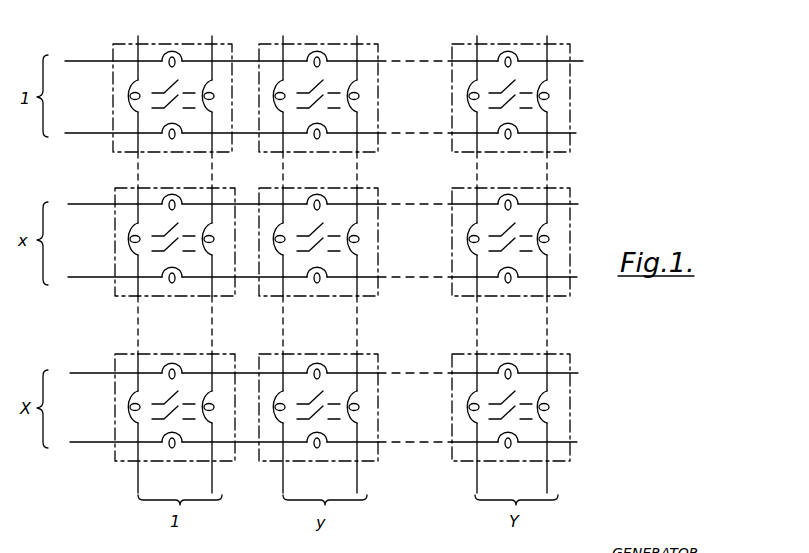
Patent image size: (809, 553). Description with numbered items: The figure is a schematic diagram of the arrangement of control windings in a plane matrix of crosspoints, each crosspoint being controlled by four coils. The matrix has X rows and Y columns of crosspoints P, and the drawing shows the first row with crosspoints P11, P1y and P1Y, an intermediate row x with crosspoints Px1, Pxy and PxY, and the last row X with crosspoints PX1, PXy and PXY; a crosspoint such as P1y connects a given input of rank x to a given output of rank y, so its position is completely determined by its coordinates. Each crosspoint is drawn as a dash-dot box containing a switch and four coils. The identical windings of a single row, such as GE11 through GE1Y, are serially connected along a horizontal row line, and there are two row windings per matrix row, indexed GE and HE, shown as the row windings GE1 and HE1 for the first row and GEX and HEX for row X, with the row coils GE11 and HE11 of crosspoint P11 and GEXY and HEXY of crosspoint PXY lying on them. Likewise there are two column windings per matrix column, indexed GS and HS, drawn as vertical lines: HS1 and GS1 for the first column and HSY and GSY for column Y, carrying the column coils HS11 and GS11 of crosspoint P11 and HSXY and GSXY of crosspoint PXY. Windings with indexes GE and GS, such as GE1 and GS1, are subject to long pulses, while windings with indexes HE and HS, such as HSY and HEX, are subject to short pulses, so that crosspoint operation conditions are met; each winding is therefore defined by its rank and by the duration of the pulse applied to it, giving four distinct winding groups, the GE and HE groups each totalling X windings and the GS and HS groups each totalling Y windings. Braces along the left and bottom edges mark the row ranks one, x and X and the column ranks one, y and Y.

The row winding GE1 is at (77, 60).
The row winding HE1 is at (78, 134).
The row winding GEX is at (82, 372).
The row winding HEX is at (92, 438).
The column winding HS1 is at (138, 481).
The column winding GS1 is at (214, 481).
The column winding HSY is at (476, 481).
The column winding GSY is at (549, 482).
The crosspoint P11 is at (232, 44).
The crosspoint P1y is at (378, 44).
The crosspoint P1Y is at (571, 48).
The crosspoint Px1 is at (235, 190).
The crosspoint Pxy is at (378, 190).
The crosspoint PxY is at (572, 193).
The crosspoint PX1 is at (235, 356).
The crosspoint PXy is at (378, 357).
The crosspoint PXY is at (572, 358).
The winding GE11 is at (166, 52).
The winding GE1Y is at (506, 52).
The winding HE11 is at (172, 142).
The winding GEXY is at (508, 363).
The winding HEXY is at (509, 450).
The winding HS11 is at (128, 96).
The winding GS11 is at (213, 96).
The winding HSXY is at (470, 410).
The winding GSXY is at (550, 407).